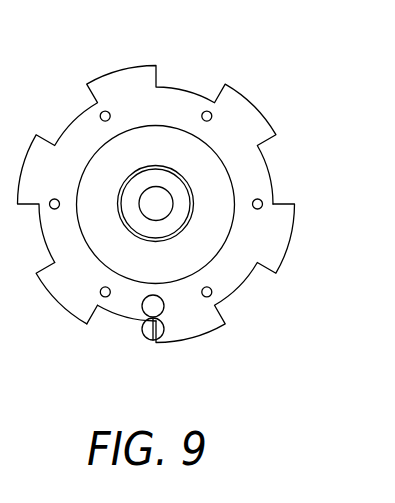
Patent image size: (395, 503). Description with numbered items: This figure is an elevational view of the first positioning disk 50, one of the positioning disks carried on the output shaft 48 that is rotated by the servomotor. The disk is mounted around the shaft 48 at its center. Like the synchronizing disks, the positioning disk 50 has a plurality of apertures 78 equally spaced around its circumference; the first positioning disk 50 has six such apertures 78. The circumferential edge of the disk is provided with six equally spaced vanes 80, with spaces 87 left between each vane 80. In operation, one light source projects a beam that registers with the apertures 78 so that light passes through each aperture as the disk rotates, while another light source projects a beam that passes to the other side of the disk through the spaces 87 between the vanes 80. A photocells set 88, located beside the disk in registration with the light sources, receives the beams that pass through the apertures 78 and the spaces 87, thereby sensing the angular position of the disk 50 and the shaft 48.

The first positioning disk 50 is at (128, 68).
The output shaft 48 is at (162, 207).
The apertures 78 is at (212, 293).
The vanes 80 is at (62, 292).
The spaces 87 is at (108, 317).
The photocells set 88 is at (160, 306).